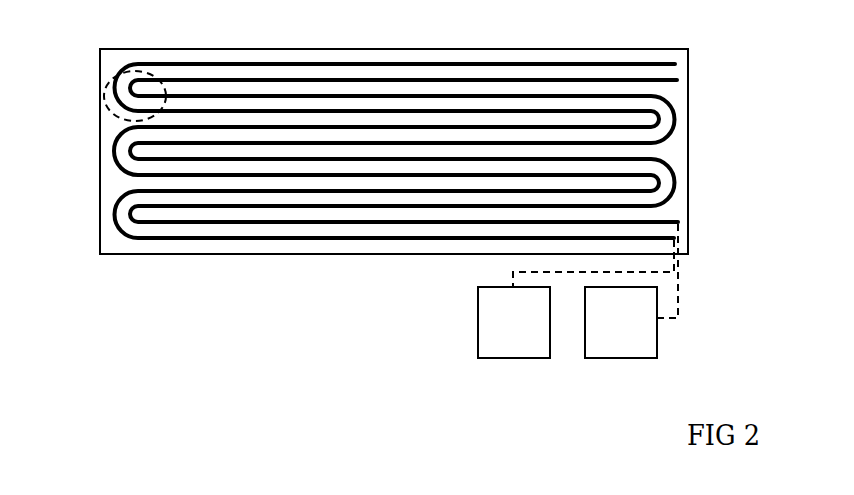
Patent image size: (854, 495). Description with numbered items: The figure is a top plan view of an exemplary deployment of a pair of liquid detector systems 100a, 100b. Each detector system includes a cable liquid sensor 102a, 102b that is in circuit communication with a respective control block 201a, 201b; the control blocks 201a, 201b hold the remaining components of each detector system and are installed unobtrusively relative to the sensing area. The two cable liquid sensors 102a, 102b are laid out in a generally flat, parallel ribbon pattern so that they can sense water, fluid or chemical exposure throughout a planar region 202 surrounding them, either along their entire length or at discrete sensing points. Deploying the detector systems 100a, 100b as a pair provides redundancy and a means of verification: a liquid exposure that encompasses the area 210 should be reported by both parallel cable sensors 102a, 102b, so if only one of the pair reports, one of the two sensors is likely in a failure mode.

The cable liquid sensor 102a is at (641, 63).
The cable liquid sensor 102b is at (673, 79).
The area 210 is at (107, 107).
The planar region 202 is at (225, 255).
The control block 201a is at (478, 318).
The control block 201b is at (658, 335).
The detector system 100a is at (475, 380).
The detector system 100b is at (706, 288).